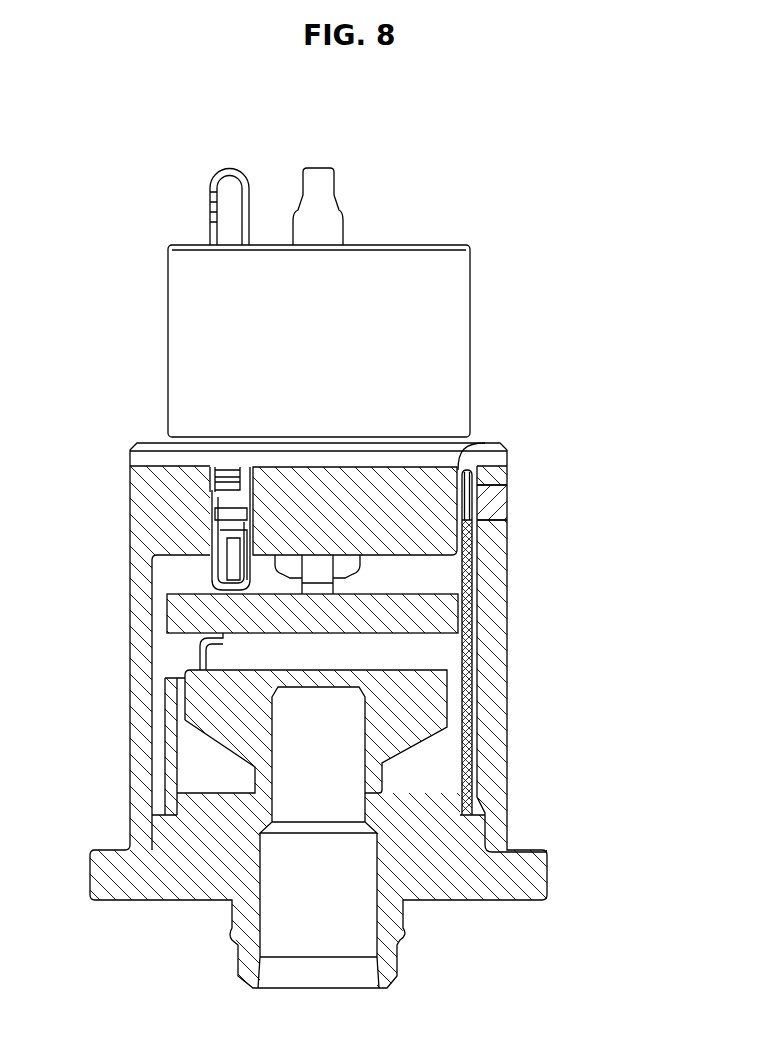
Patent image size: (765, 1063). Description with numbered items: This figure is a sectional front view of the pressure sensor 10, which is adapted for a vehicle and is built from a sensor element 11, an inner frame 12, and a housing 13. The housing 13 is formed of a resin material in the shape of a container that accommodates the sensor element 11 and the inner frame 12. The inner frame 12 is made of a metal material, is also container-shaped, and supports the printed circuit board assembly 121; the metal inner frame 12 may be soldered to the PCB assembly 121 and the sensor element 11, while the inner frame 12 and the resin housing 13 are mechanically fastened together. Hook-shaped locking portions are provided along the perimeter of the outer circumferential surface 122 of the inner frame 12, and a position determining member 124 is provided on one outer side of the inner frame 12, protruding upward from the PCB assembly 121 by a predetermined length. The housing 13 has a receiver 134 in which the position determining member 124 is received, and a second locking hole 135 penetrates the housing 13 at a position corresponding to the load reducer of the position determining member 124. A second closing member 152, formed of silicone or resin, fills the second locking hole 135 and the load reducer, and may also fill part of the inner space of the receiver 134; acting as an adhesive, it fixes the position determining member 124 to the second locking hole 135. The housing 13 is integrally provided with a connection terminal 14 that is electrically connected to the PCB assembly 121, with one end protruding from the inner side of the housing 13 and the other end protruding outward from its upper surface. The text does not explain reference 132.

The pressure sensor 10 is at (332, 125).
The sensor element 11 is at (535, 877).
The inner frame 12 is at (364, 720).
The housing 13 is at (455, 341).
The connection terminal 14 is at (150, 519).
The printed circuit board assembly 121 is at (437, 618).
The outer circumferential surface 122 is at (583, 528).
The position determining member 124 is at (468, 547).
The terminal contact 132 is at (213, 484).
The receiver 134 is at (472, 447).
The second locking hole 135 is at (505, 492).
The second closing member 152 is at (490, 507).